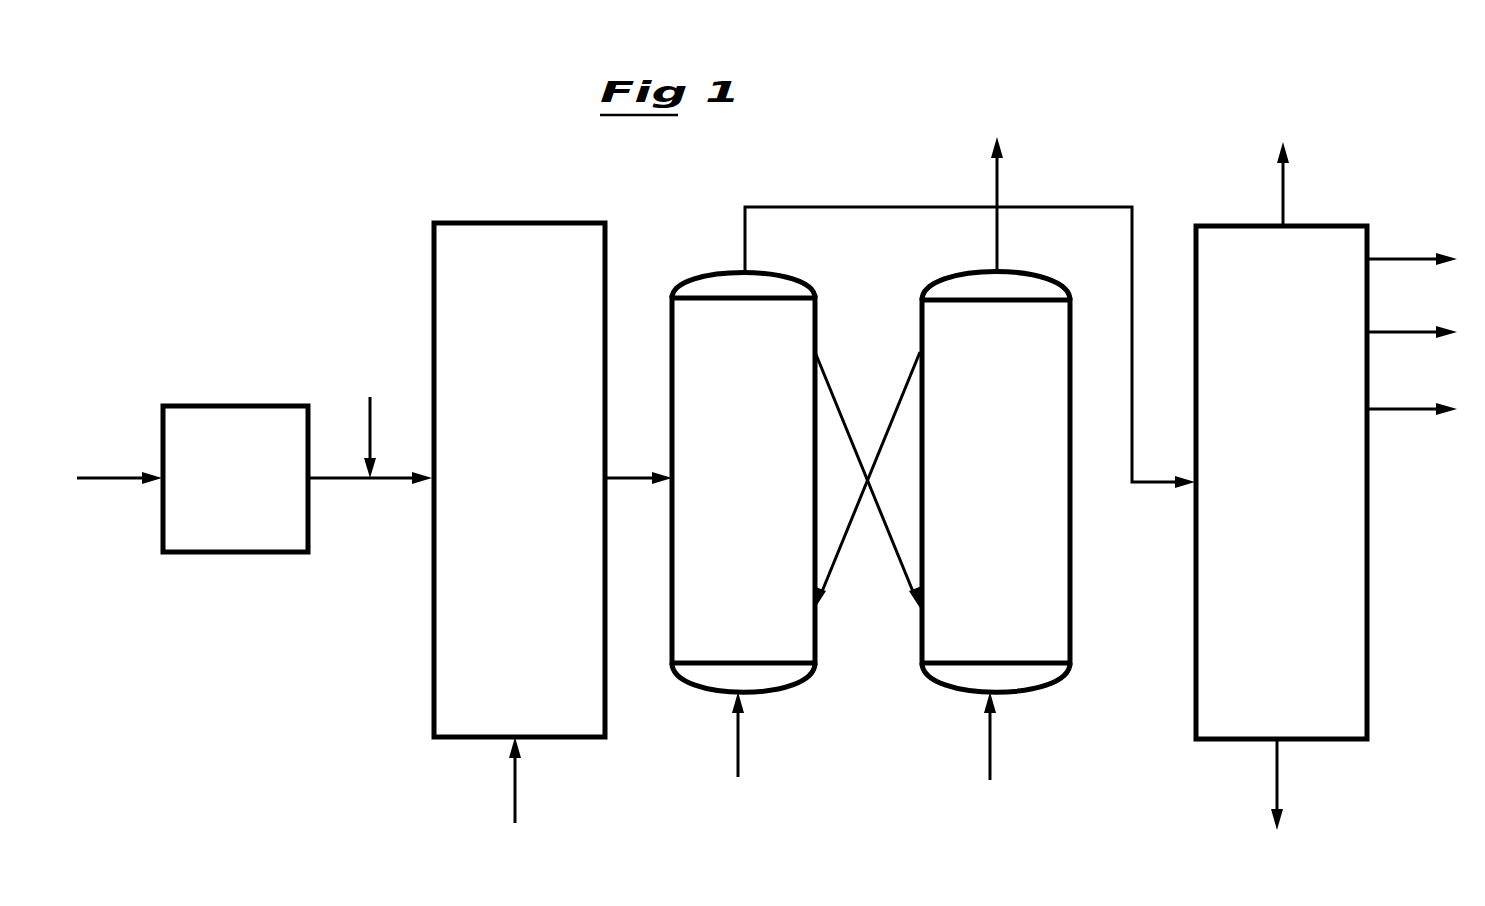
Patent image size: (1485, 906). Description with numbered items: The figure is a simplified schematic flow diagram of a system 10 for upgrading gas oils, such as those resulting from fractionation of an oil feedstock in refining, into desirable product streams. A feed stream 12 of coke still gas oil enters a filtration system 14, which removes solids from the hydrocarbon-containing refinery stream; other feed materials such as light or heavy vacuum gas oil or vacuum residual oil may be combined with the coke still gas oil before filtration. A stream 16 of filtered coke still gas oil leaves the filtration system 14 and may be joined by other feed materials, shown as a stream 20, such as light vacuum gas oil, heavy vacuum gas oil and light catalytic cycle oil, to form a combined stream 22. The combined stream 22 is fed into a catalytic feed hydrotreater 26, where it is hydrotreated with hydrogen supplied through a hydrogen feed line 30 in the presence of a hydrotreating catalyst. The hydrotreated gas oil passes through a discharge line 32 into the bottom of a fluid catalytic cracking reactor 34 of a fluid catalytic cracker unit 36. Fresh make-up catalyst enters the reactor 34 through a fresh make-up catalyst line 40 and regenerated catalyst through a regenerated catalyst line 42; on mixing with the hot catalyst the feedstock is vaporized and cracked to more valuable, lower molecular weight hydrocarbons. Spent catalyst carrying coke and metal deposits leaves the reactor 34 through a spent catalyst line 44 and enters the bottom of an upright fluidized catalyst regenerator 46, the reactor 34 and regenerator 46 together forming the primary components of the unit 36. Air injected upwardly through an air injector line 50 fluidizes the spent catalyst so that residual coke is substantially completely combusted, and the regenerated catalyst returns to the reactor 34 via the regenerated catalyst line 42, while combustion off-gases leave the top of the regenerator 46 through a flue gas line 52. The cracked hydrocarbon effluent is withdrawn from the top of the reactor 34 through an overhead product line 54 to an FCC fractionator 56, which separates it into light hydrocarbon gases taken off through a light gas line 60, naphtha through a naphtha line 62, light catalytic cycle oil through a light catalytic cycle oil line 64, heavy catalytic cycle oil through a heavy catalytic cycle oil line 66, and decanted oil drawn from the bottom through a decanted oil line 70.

The system 10 is at (362, 112).
The feed stream 12 is at (112, 478).
The filtration system 14 is at (246, 492).
The stream of filtered coke still gas oils 16 is at (334, 482).
The stream of other feed materials 20 is at (370, 412).
The combined stream 22 is at (392, 482).
The catalytic feed hydrotreater 26 is at (530, 452).
The hydrogen feed line 30 is at (516, 812).
The discharge line 32 is at (628, 472).
The fluid catalytic cracking reactor 34 is at (752, 446).
The fluid catalytic cracker unit 36 is at (824, 268).
The fresh make-up catalyst line 40 is at (739, 758).
The regenerated catalyst line 42 is at (888, 428).
The spent catalyst line 44 is at (888, 544).
The catalyst regenerator 46 is at (1006, 446).
The air injector line 50 is at (991, 758).
The flue gas line 52 is at (998, 184).
The overhead product line 54 is at (872, 206).
The FCC fractionator 56 is at (1294, 446).
The light gas line 60 is at (1284, 188).
The naphtha line 62 is at (1392, 258).
The light catalytic cycle oil line 64 is at (1392, 331).
The heavy catalytic cycle oil line 66 is at (1388, 408).
The decanted oil line 70 is at (1278, 798).